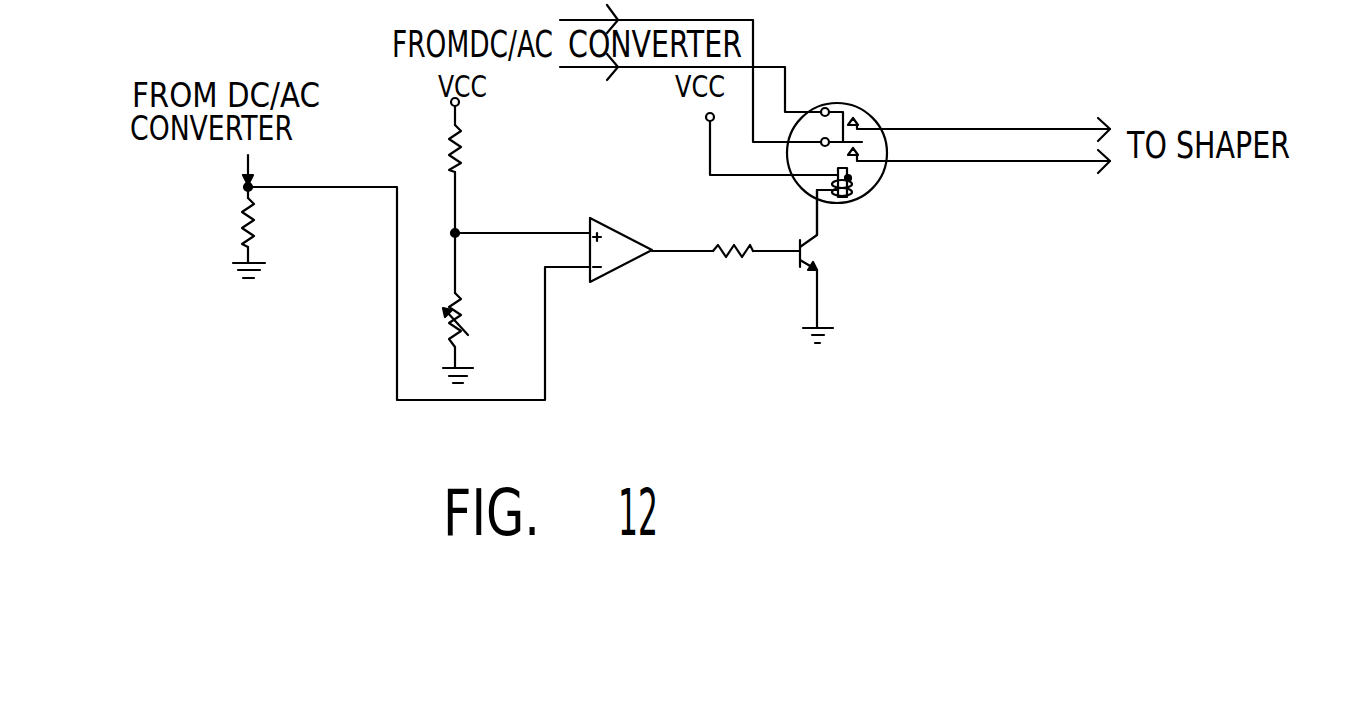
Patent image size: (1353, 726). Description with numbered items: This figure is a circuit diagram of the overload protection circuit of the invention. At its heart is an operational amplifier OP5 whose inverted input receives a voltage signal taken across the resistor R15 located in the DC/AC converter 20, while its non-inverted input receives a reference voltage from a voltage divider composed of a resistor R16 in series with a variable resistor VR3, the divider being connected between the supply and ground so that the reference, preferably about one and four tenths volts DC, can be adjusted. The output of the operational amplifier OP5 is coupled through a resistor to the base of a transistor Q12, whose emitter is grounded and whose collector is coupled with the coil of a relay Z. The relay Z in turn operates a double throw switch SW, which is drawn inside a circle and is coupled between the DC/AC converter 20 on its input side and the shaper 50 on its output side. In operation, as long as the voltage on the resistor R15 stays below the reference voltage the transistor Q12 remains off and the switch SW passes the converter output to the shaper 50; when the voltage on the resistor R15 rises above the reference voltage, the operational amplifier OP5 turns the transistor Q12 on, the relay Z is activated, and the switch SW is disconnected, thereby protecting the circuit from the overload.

The resistor R15 is at (267, 232).
The resistor R16 is at (478, 148).
The variable resistor VR3 is at (480, 338).
The operational amplifier OP5 is at (631, 263).
The transistor Q12 is at (832, 266).
The double throw switch SW is at (837, 136).
The relay Z is at (861, 201).
The DC/AC converter 20 is at (297, 148).
The shaper 50 is at (1100, 145).